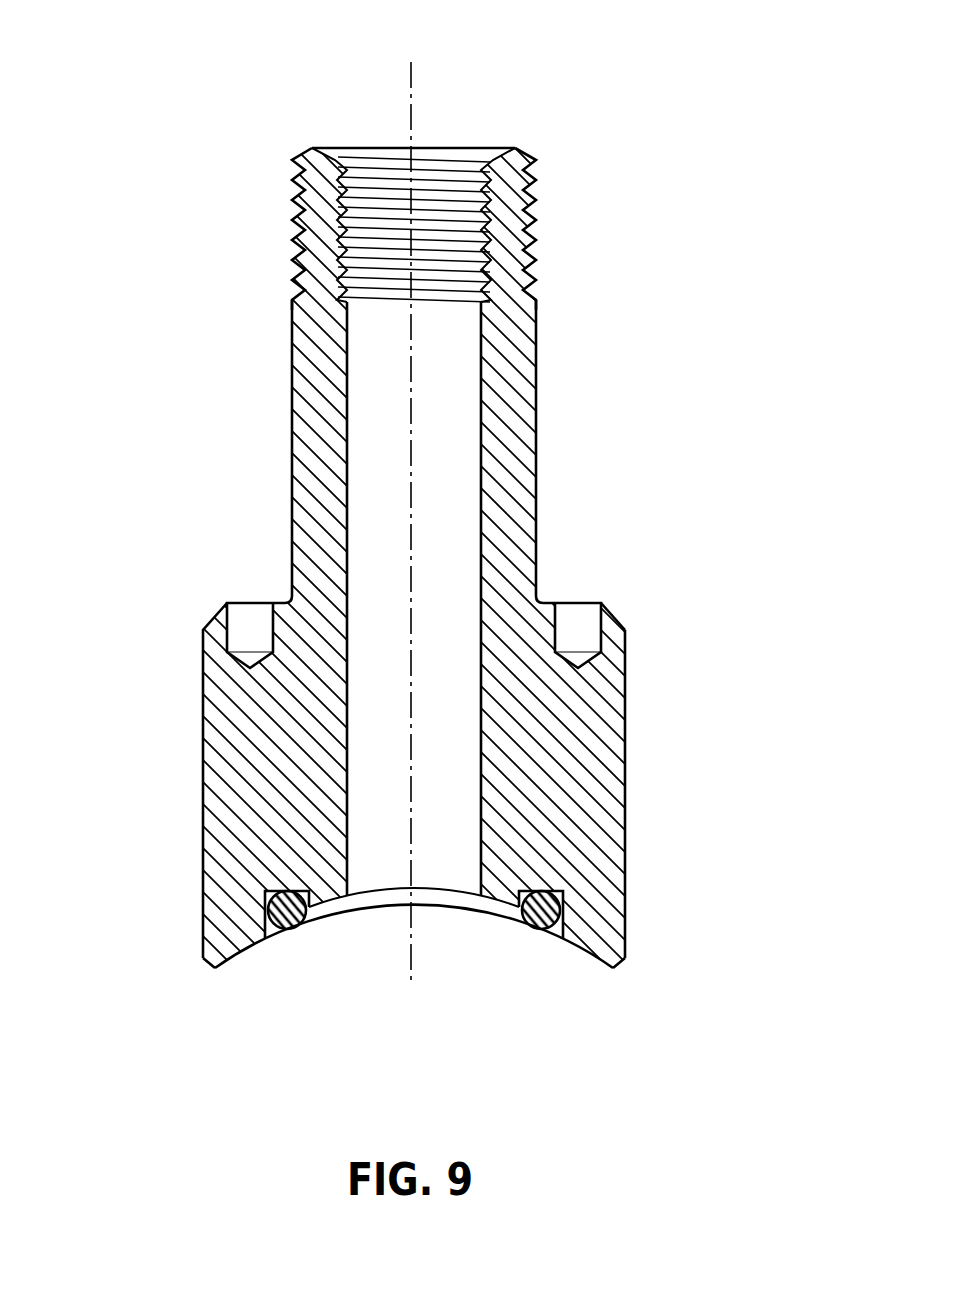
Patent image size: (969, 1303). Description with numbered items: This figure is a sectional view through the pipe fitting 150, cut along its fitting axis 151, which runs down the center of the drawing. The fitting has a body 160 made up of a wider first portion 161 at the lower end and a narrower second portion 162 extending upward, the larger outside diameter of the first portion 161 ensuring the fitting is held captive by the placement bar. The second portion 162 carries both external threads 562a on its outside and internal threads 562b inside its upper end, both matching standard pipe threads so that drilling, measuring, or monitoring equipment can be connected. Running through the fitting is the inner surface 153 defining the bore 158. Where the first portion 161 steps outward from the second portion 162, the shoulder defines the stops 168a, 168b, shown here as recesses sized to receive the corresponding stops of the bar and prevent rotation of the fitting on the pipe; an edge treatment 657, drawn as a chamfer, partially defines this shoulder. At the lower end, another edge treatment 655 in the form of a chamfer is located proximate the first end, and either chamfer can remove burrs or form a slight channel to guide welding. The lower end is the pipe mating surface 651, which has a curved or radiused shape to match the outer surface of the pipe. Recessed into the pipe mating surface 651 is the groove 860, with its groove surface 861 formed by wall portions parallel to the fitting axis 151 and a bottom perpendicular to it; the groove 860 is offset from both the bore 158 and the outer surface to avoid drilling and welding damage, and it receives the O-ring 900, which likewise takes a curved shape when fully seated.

The pipe fitting 150 is at (206, 58).
The fitting axis 151 is at (411, 100).
The external threads 562a is at (536, 214).
The internal threads 562b is at (453, 175).
The second portion 162 is at (536, 422).
The inner surface 153 is at (570, 599).
The bore 158 is at (450, 767).
The stop 168a is at (598, 622).
The stop 168b is at (226, 630).
The edge treatment 657 is at (680, 578).
The body 160 is at (519, 780).
The first portion 161 is at (623, 815).
The edge treatment 655 is at (213, 968).
The pipe mating surface 651 is at (592, 961).
The O-ring 900 is at (507, 917).
The groove 860 is at (410, 968).
The groove surface 861 is at (287, 932).